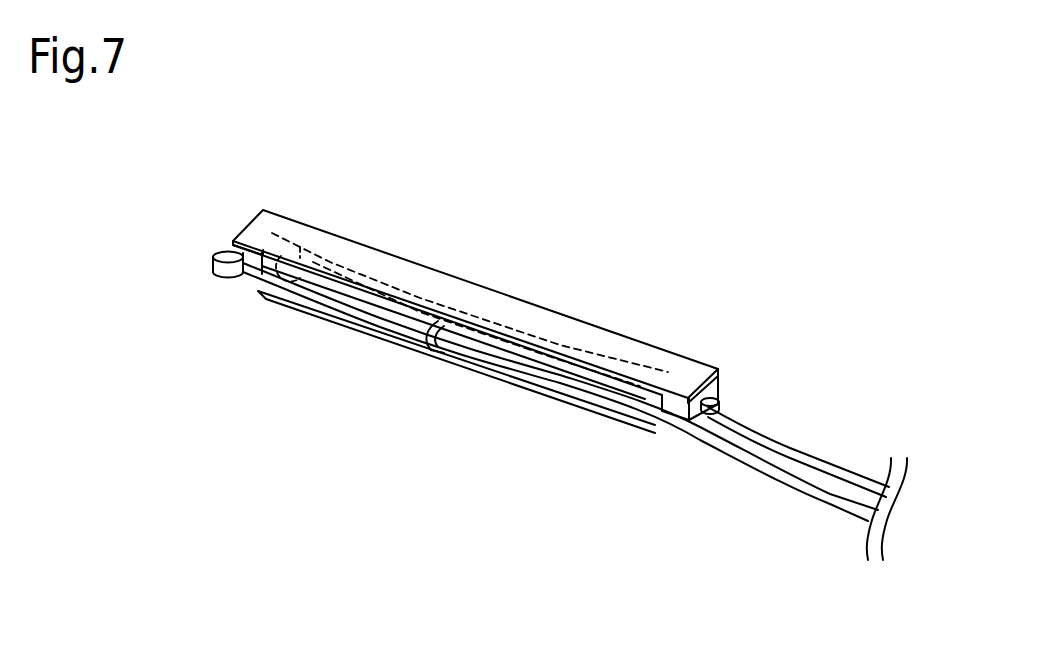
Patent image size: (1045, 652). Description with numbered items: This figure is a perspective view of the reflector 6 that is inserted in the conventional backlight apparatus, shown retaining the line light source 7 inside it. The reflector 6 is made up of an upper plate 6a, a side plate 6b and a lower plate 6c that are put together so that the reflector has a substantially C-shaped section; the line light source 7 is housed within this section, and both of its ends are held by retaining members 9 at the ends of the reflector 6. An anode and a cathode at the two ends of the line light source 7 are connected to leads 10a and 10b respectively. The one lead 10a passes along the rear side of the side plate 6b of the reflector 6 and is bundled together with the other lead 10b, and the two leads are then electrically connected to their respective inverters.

The reflector 6 is at (475, 358).
The upper plate 6a is at (547, 333).
The side plate 6b is at (377, 330).
The lower plate 6c is at (711, 428).
The line light source 7 is at (436, 302).
The retaining members 9 is at (232, 282).
The lead 10a is at (490, 348).
The lead 10b is at (743, 433).